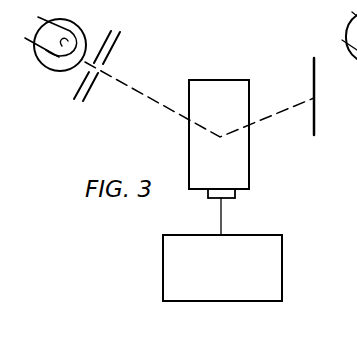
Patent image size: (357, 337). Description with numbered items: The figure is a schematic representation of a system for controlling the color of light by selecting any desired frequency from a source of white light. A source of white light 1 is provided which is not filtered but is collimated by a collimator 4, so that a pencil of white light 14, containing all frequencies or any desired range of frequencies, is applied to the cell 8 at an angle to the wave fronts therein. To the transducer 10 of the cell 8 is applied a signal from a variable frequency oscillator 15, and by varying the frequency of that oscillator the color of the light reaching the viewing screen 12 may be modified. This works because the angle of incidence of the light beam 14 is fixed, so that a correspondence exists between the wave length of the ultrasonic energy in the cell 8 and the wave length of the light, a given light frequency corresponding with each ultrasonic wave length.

The source of white light 1 is at (76, 26).
The collimator 4 is at (91, 100).
The pencil of white light 14 is at (120, 78).
The cell 8 is at (216, 80).
The viewing screen 12 is at (315, 100).
The transducer 10 is at (236, 193).
The variable frequency oscillator 15 is at (272, 247).